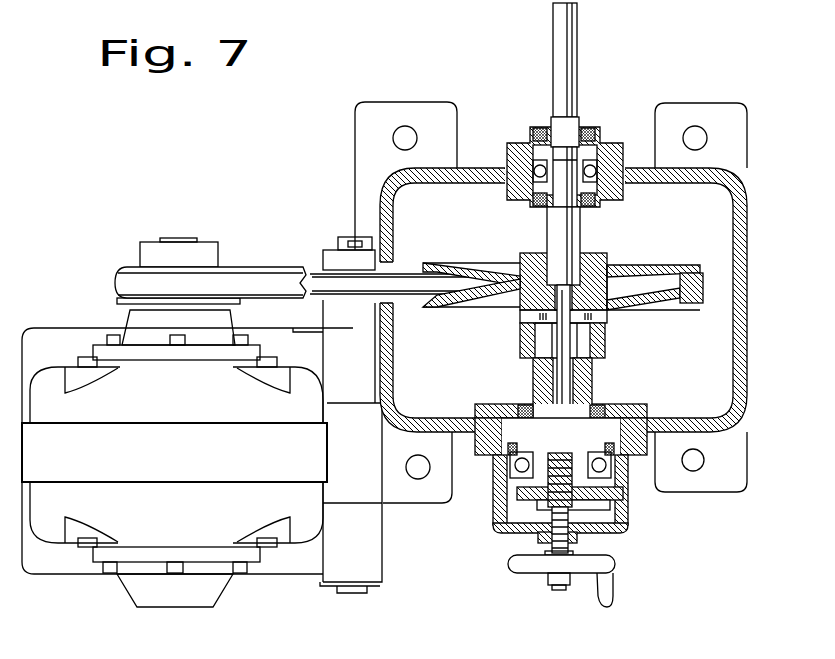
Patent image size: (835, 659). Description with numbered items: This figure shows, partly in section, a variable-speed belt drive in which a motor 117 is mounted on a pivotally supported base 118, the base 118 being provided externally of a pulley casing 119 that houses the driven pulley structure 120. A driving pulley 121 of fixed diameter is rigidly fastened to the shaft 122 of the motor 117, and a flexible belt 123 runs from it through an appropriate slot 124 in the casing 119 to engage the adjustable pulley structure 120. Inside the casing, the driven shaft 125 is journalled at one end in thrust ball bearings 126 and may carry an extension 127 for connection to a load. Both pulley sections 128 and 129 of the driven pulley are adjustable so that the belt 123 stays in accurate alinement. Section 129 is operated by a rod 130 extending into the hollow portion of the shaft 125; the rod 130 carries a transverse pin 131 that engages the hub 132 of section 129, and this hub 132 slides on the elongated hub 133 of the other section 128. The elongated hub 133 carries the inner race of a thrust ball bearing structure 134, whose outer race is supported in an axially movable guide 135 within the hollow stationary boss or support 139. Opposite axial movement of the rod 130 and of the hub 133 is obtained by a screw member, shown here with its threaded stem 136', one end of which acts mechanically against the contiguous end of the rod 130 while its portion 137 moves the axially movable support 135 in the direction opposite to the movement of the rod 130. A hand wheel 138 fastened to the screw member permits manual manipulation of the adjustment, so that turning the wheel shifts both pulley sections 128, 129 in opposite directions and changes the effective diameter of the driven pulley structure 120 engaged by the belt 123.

The motor 117 is at (176, 462).
The base 118 is at (287, 578).
The pulley casing 119 is at (744, 251).
The driven pulley structure 120 is at (646, 256).
The driving pulley 121 is at (127, 265).
The shaft 122 is at (153, 307).
The flexible belt 123 is at (273, 282).
The slot 124 is at (378, 238).
The driven shaft 125 is at (580, 229).
The thrust ball bearings 126 is at (600, 143).
The extension 127 is at (577, 57).
The pulley section 128 is at (484, 237).
The pulley section 129 is at (465, 308).
The rod 130 is at (571, 389).
The transverse pin 131 is at (608, 318).
The hub 132 is at (608, 346).
The elongated hub 133 is at (533, 372).
The thrust ball bearing structure 134 is at (498, 491).
The axially movable guide 135 is at (502, 518).
The threaded stem 136' is at (601, 505).
The portion of screw member 137 is at (570, 505).
The hand wheel 138 is at (530, 577).
The hollow stationary boss 139 is at (507, 532).